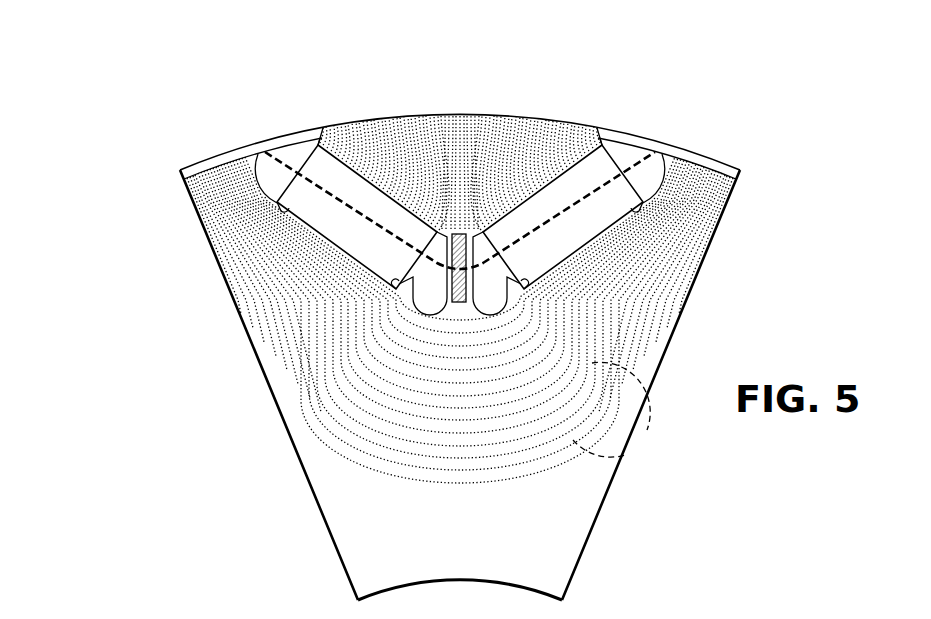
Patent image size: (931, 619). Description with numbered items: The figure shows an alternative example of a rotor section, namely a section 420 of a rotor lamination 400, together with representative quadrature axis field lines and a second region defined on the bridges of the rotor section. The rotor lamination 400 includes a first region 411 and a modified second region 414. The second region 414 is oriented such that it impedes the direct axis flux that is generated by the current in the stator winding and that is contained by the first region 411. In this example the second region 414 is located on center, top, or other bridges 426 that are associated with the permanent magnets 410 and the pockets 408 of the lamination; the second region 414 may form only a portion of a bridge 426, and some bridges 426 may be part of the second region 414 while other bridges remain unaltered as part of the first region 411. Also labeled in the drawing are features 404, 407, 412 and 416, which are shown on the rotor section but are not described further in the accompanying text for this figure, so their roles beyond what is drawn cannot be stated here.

The lamination 400 is at (660, 68).
The section 420 is at (460, 299).
The outer surface of rotor core 404 is at (493, 108).
The rotor pole boundary 407 is at (188, 166).
The pockets 408 is at (268, 167).
The permanent magnets 410 is at (363, 182).
The first region 411 is at (363, 560).
The outer bridge 412 is at (286, 139).
The second region 414 is at (243, 150).
The hole 416 is at (640, 432).
The bridges 426 is at (262, 150).